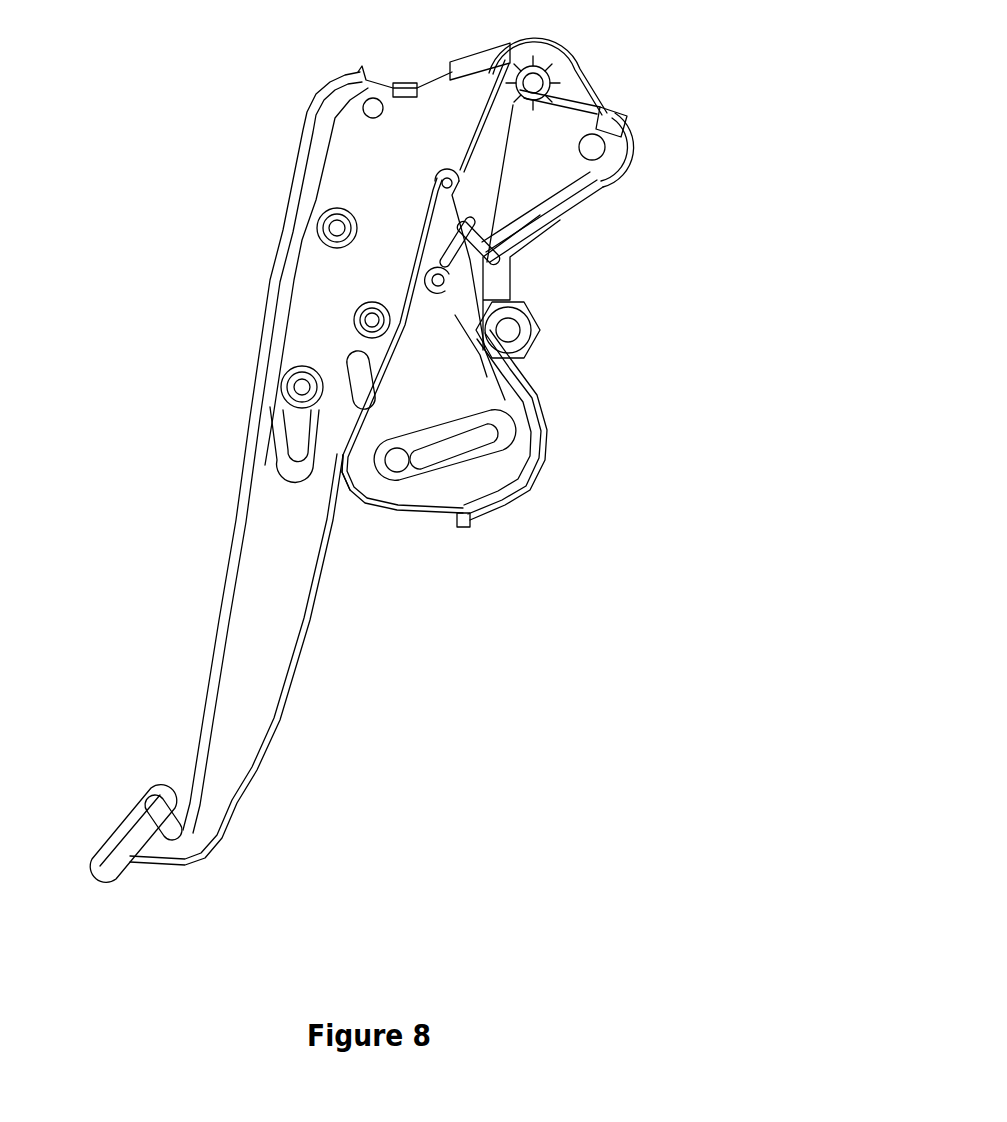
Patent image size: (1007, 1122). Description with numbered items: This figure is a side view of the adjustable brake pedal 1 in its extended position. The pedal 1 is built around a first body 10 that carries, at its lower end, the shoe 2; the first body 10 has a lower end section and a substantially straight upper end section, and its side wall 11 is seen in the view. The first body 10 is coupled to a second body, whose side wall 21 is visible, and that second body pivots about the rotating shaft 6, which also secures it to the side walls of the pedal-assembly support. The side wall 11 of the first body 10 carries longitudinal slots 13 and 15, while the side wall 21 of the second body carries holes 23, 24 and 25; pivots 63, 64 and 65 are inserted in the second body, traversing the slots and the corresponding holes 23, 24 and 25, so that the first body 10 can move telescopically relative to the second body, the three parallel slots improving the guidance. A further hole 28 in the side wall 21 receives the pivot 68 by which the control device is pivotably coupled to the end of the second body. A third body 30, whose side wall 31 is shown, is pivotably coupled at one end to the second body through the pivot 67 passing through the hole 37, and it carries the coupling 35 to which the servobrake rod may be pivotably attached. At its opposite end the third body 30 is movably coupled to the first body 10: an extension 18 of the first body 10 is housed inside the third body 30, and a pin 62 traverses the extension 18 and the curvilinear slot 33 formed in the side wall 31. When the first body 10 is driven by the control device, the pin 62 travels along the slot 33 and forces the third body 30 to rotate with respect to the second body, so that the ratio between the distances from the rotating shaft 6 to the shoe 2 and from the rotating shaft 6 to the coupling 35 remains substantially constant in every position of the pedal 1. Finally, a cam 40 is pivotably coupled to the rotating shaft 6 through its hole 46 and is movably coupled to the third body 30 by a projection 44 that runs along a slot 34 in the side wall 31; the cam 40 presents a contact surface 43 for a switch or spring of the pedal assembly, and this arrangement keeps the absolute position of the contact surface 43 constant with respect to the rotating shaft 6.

The adjustable brake pedal 1 is at (477, 692).
The shoe 2 is at (130, 820).
The first body 10 is at (243, 730).
The side wall 11 is at (290, 570).
The side wall 21 is at (392, 170).
The slot 13 is at (293, 447).
The slot 15 is at (362, 368).
The extension 18 is at (340, 457).
The hole 23 is at (225, 387).
The pivot 63 is at (302, 387).
The hole 24 is at (266, 217).
The pivot 64 is at (337, 228).
The hole 25 is at (270, 293).
The pivot 65 is at (372, 320).
The hole 28 is at (294, 78).
The pivot 68 is at (373, 108).
The third body 30 is at (517, 447).
The side wall 31 is at (432, 403).
The slot 33 is at (467, 447).
The slot 34 is at (445, 302).
The coupling 35 is at (510, 330).
The hole 37 is at (668, 147).
The pivot 67 is at (592, 147).
The cam 40 is at (513, 160).
The contact surface 43 is at (483, 262).
The projection 44 is at (438, 280).
The hole 46 is at (608, 76).
The rotating shaft 6 is at (537, 83).
The pin 62 is at (401, 462).